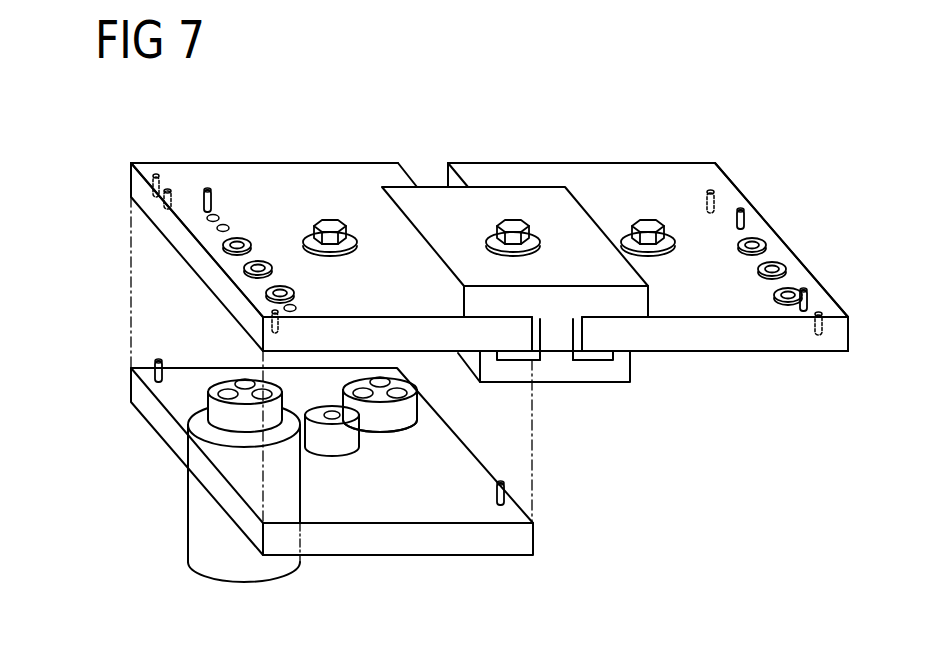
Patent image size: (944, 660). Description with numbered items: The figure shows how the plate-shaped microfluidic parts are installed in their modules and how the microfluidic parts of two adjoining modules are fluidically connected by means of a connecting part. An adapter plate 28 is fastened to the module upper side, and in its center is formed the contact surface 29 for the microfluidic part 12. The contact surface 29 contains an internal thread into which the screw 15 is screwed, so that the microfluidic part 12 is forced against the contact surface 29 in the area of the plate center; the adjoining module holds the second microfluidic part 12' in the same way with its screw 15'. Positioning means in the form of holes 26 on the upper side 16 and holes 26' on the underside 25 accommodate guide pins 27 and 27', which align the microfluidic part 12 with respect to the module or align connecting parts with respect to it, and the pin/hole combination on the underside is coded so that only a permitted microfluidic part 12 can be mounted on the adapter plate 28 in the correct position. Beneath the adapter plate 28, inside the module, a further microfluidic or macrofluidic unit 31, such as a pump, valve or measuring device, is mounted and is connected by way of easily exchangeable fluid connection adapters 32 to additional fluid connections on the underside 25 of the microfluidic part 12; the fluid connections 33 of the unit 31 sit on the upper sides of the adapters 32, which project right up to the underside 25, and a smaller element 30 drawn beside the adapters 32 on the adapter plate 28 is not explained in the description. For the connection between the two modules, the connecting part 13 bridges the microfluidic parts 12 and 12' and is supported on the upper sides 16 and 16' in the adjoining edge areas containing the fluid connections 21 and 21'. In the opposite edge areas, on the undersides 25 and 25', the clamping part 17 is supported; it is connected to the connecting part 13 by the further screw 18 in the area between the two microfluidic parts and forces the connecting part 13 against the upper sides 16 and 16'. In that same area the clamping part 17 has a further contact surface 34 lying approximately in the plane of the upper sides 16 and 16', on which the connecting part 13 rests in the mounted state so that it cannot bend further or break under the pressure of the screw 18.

The microfluidic part 12 is at (227, 255).
The microfluidic part 12' is at (672, 257).
The connecting part 13 is at (445, 200).
The screw 15 is at (331, 170).
The screw 15' is at (611, 170).
The upper side 16 is at (264, 201).
The upper side 16' is at (648, 201).
The clamping part 17 is at (612, 372).
The further screw 18 is at (514, 220).
The fluid connections 21 is at (224, 279).
The fluid connections 21' is at (793, 240).
The underside 25 is at (555, 381).
The underside 25' is at (748, 368).
The holes 26 is at (133, 249).
The holes 26' is at (104, 209).
The guide pins 27 is at (201, 148).
The guide pins 27' is at (99, 362).
The adapter plate 28 is at (422, 540).
The contact surface 29 is at (357, 412).
The small cylindrical element 30 is at (348, 425).
The further microfluidic or macrofluidic unit 31 is at (203, 515).
The fluid connection adapters 32 is at (218, 412).
The fluid connections 33 is at (258, 397).
The further contact surface 34 is at (548, 316).